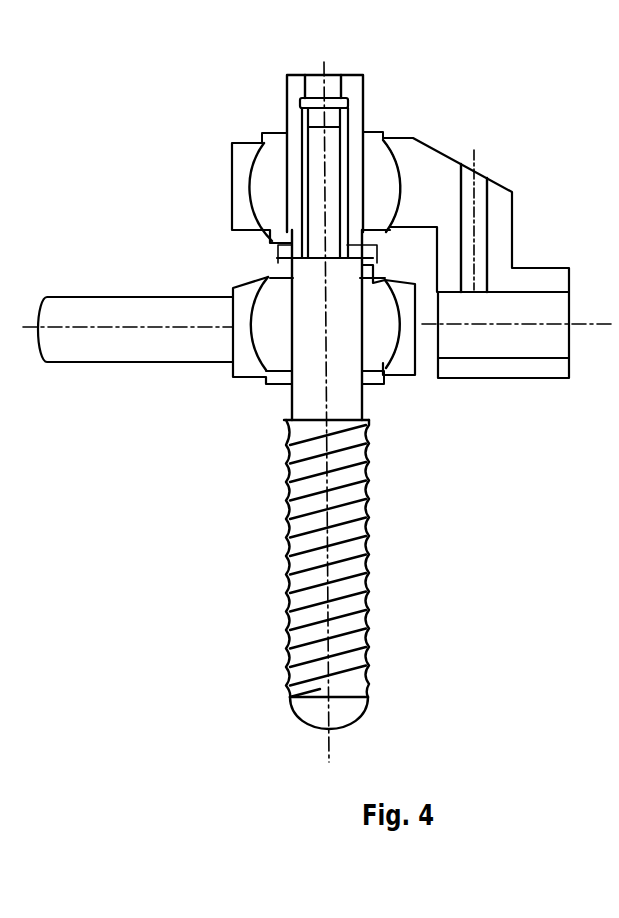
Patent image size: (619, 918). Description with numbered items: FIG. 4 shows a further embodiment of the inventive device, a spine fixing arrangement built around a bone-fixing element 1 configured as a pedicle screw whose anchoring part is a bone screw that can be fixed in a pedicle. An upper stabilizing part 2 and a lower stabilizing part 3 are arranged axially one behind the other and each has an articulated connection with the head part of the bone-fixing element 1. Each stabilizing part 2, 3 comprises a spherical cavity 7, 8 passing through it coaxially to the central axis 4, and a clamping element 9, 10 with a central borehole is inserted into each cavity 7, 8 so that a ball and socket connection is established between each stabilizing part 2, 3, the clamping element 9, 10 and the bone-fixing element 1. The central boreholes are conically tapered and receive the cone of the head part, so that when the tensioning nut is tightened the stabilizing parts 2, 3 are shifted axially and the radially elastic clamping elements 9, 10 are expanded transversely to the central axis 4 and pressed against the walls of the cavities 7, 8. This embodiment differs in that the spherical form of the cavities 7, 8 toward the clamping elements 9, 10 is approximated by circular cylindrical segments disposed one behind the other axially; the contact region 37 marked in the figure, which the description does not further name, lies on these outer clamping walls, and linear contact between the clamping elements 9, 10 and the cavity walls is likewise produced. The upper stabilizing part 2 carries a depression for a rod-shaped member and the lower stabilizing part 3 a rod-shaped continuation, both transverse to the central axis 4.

The bone-fixing element 1 is at (387, 467).
The upper stabilizing part 2 is at (420, 167).
The lower stabilizing part 3 is at (242, 307).
The central axis 4 is at (322, 588).
The spherical cavity 7 is at (250, 187).
The spherical cavity 8 is at (253, 343).
The clamping element 9 is at (282, 162).
The clamping element 10 is at (282, 335).
The spherical clamping surface 37 is at (395, 208).